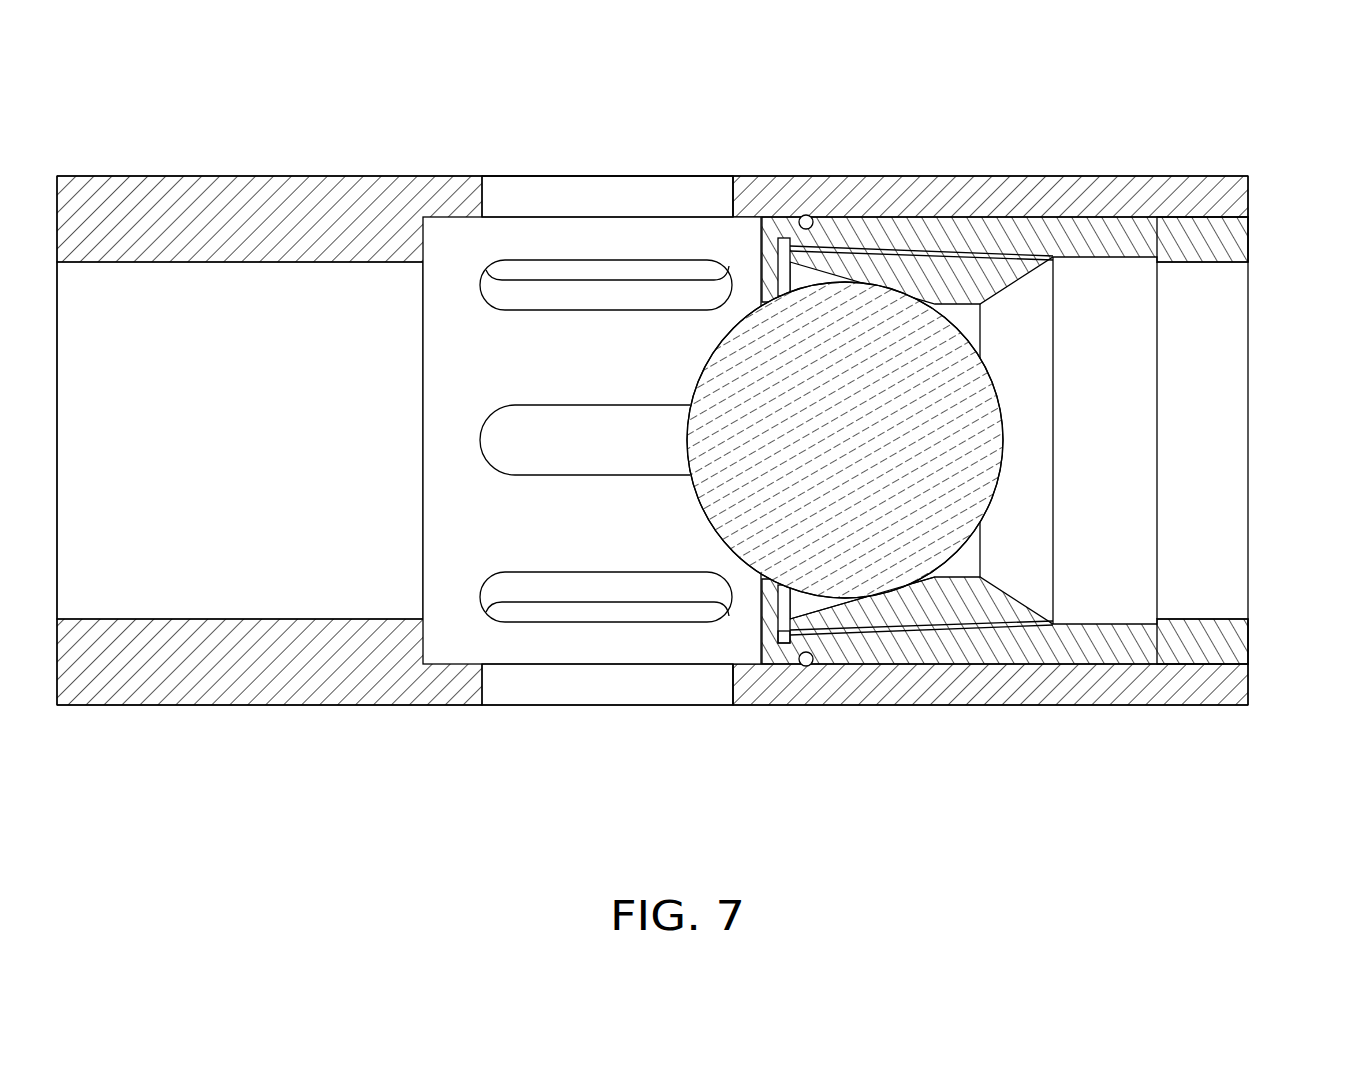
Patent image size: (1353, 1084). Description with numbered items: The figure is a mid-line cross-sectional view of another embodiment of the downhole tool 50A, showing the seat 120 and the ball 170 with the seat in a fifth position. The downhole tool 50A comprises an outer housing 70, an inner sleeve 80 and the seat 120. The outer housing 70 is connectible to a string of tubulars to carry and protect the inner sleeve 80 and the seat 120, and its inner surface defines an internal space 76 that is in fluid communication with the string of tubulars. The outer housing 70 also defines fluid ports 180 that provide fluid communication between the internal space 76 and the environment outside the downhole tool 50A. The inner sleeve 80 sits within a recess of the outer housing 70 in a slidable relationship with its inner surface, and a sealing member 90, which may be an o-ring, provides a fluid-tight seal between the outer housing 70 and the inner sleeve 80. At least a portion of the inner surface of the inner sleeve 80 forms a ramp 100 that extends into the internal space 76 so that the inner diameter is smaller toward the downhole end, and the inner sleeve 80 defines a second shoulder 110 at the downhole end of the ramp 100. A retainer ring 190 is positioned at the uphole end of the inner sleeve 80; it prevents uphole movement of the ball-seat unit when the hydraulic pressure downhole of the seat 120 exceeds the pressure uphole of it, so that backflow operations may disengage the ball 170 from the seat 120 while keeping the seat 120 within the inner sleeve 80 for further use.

The downhole tool 50A is at (1176, 145).
The outer housing 70 is at (1222, 192).
The internal space 76 is at (183, 439).
The inner sleeve 80 is at (1225, 250).
The sealing member 90 is at (804, 214).
The ramp 100 is at (1073, 256).
The second shoulder 110 is at (1172, 258).
The seat 120 is at (862, 638).
The ball 170 is at (1005, 425).
The fluid ports 180 is at (580, 177).
The retainer ring 190 is at (780, 642).